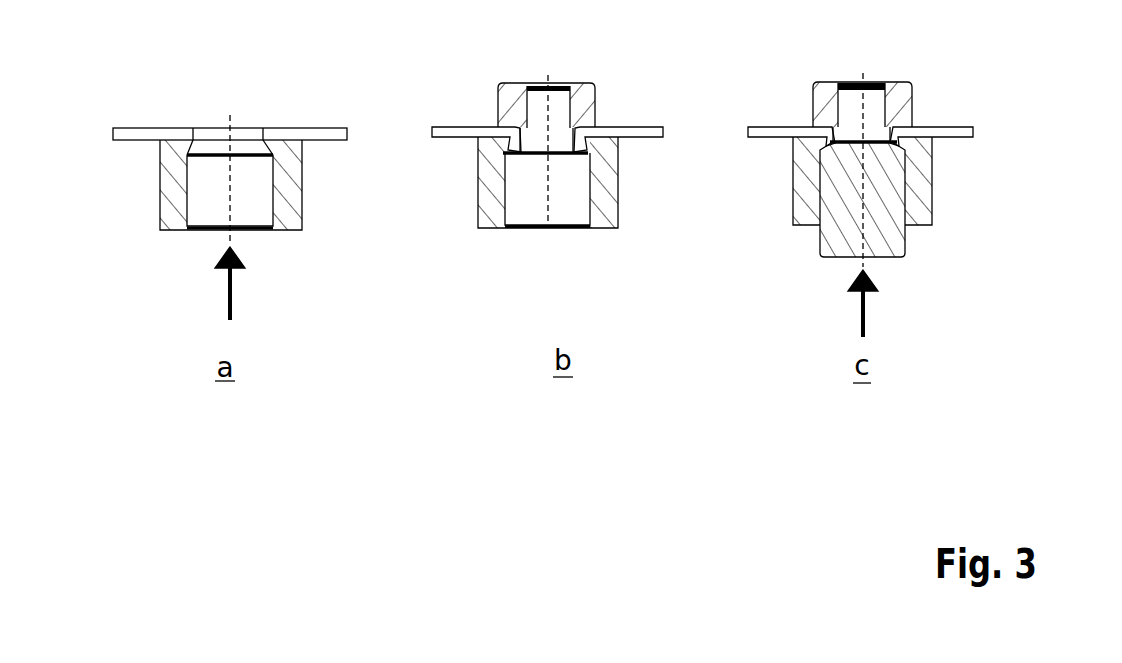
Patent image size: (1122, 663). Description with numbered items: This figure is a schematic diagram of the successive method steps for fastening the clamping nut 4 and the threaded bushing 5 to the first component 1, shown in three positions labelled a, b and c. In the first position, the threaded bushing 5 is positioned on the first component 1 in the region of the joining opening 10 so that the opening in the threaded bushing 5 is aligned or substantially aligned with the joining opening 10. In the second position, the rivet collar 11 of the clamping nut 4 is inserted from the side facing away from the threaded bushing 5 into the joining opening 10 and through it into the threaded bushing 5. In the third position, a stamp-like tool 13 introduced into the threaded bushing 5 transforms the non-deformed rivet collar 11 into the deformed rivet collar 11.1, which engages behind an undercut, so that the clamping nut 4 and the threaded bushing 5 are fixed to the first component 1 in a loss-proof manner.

The first component 1 is at (138, 128).
The clamping nut 4 is at (587, 102).
The threaded bushing 5 is at (170, 207).
The joining opening 10 is at (237, 127).
The rivet collar 11 is at (523, 153).
The deformed rivet collar 11.1 is at (900, 145).
The stamp-like tool 13 is at (893, 220).